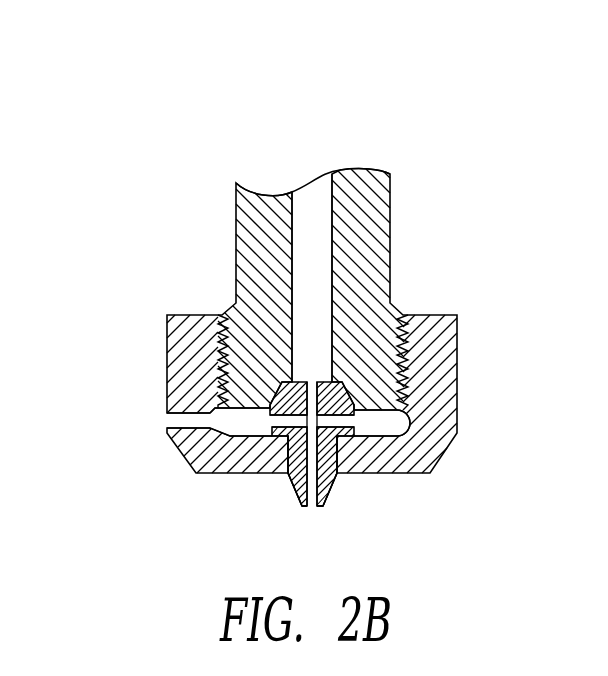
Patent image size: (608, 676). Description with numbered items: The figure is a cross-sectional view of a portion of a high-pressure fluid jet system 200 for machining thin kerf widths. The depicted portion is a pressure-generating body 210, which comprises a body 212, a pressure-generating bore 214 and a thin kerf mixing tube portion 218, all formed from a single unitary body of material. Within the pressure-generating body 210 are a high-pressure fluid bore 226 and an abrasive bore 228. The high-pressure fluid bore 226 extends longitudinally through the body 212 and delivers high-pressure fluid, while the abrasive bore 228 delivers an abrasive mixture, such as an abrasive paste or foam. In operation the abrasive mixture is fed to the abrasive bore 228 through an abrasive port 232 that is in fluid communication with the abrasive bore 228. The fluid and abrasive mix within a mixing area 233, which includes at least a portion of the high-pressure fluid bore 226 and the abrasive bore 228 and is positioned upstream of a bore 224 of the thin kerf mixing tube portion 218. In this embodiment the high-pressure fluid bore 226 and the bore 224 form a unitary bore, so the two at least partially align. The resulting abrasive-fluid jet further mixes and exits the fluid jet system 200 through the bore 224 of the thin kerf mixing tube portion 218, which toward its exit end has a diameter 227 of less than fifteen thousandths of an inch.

The fluid jet system 200 is at (317, 306).
The pressure-generating body 210 is at (327, 512).
The body 212 is at (318, 420).
The pressure-generating bore 214 is at (318, 402).
The thin kerf mixing tube portion 218 is at (297, 494).
The bore 224 is at (308, 510).
The high-pressure fluid bore 226 is at (333, 389).
The diameter 227 is at (327, 492).
The abrasive bore 228 is at (262, 421).
The abrasive port 232 is at (165, 421).
The mixing area 233 is at (358, 421).